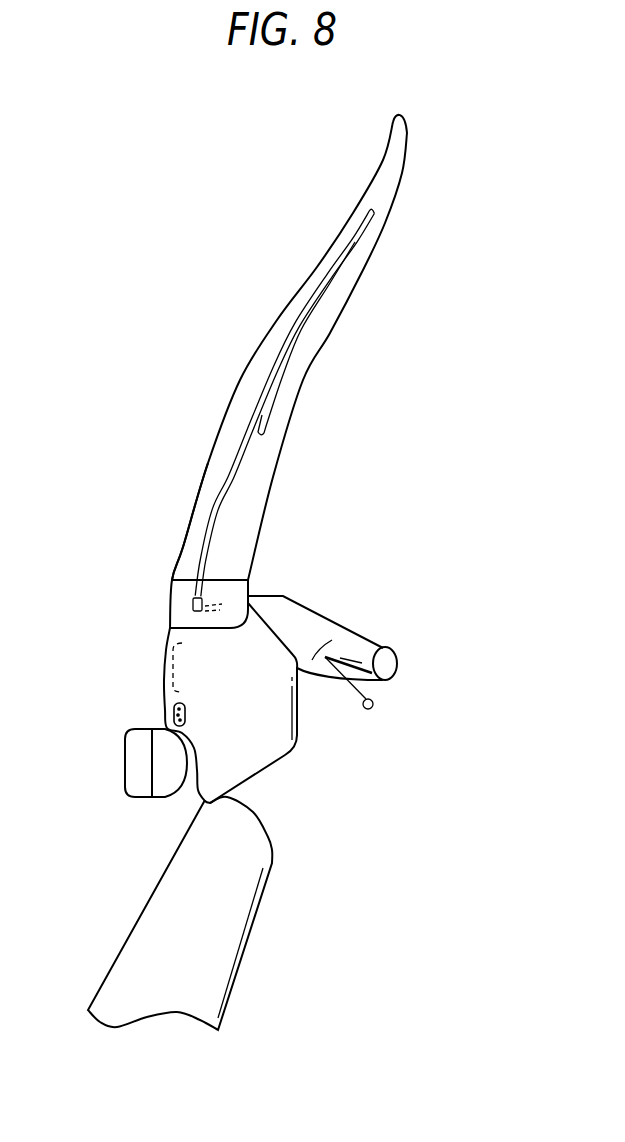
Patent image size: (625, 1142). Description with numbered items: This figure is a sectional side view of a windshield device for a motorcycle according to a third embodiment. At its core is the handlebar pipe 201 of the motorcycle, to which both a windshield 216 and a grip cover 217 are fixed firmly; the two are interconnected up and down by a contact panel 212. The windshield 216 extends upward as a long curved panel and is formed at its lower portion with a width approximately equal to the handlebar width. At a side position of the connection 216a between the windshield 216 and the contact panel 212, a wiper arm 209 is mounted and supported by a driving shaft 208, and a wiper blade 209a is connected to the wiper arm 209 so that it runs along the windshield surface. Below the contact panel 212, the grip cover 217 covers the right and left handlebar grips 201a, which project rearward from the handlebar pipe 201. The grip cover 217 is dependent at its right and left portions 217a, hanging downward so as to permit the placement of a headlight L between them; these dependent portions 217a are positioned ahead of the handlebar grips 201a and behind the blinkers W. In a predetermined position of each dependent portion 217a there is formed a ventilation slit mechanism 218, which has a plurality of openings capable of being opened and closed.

The windshield 216 is at (278, 333).
The connection 216a is at (190, 553).
The contact panel 212 is at (175, 597).
The wiper arm 209 is at (255, 422).
The wiper blade 209a is at (305, 330).
The driving shaft 208 is at (207, 602).
The grip cover 217 is at (253, 745).
The handlebar pipe 201 is at (350, 652).
The handlebar grips 201a is at (397, 663).
The headlight L is at (172, 667).
The ventilation slit mechanism 218 is at (173, 713).
The blinkers W is at (138, 782).
The dependent portions 217a is at (203, 808).